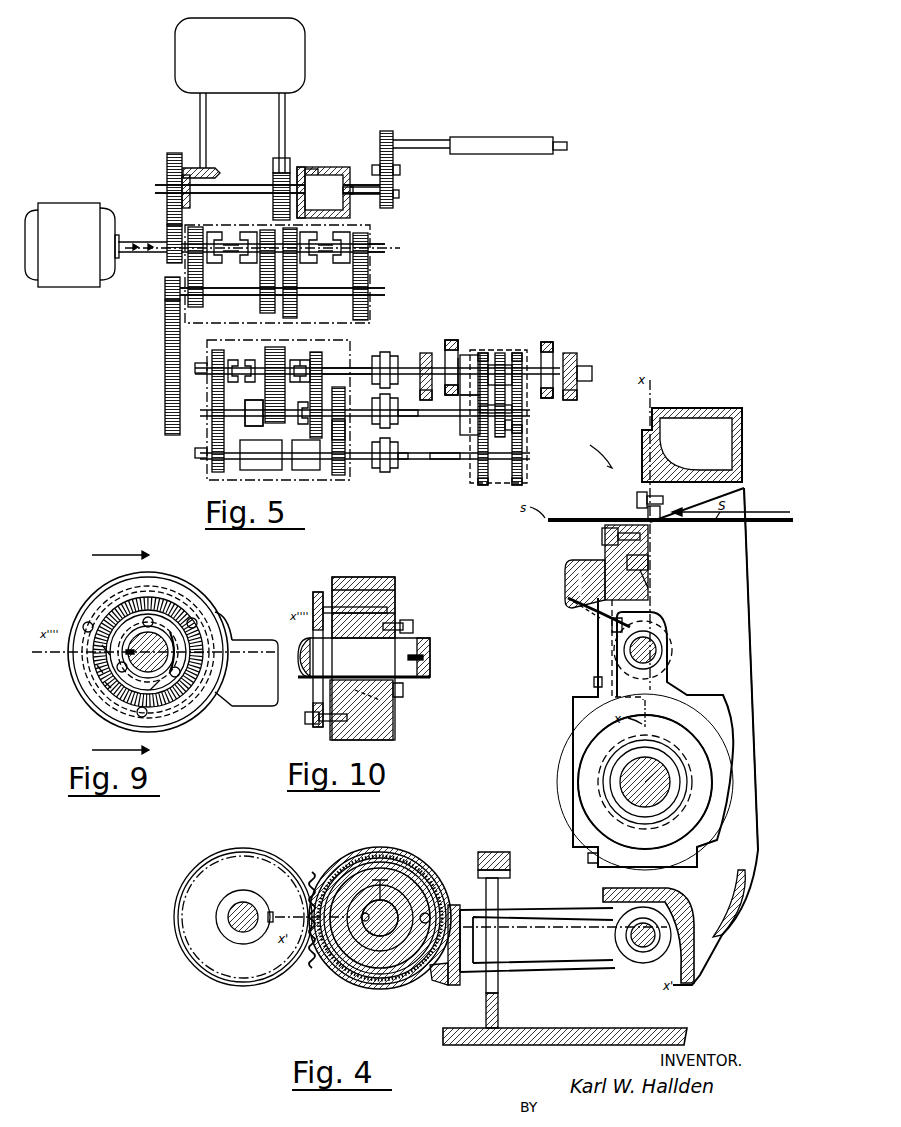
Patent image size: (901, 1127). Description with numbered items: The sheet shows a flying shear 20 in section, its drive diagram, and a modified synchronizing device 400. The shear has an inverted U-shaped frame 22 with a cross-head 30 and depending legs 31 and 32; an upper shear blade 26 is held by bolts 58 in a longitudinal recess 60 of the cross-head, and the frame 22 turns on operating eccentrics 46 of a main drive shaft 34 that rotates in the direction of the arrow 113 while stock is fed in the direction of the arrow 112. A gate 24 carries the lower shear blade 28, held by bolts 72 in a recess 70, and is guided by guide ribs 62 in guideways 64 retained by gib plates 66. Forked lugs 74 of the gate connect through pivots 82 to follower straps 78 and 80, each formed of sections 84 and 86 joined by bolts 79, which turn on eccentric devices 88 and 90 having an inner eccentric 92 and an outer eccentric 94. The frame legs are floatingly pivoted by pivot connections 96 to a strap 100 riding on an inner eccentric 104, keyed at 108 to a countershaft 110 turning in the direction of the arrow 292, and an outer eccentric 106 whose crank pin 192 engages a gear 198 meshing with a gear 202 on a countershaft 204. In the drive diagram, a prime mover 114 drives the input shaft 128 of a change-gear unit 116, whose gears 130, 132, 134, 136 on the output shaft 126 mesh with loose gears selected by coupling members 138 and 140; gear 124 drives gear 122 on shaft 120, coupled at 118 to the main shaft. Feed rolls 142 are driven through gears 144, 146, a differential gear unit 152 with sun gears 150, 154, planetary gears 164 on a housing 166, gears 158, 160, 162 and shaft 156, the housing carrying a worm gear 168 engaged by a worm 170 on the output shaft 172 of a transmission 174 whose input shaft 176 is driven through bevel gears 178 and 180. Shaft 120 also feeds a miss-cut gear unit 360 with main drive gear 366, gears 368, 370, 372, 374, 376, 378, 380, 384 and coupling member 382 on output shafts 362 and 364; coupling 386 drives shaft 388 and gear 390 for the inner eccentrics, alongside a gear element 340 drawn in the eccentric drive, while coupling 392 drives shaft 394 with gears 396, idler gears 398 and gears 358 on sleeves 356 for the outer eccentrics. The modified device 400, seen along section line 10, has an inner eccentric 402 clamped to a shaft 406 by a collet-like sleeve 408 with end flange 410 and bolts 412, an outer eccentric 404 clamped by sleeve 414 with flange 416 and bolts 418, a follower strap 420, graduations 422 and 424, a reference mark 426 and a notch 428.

In FIG. 5, the prime mover 114 is at (83, 215).
In FIG. 5, the transmission 174 is at (315, 57).
In FIG. 5, the input shaft 176 is at (200, 111).
In FIG. 5, the output shaft 172 is at (288, 124).
In FIG. 5, the worm gear 168 is at (277, 160).
In FIG. 5, the worm 170 is at (273, 189).
In FIG. 5, the bevel gear 178 is at (210, 170).
In FIG. 5, the bevel gear 180 is at (190, 200).
In FIG. 5, the gear 146 is at (168, 168).
In FIG. 5, the gear 144 is at (168, 237).
In FIG. 5, the gear 124 is at (170, 290).
In FIG. 5, the gear 122 is at (170, 340).
In FIG. 5, the input shaft 128 is at (258, 175).
In FIG. 5, the sun gear 150 is at (316, 173).
In FIG. 5, the sun gear 154 is at (330, 182).
In FIG. 5, the differential gear unit 152 is at (354, 163).
In FIG. 5, the arm or housing 166 is at (352, 188).
In FIG. 5, the planetary gears 164 is at (303, 170).
In FIG. 5, the shaft 156 is at (362, 195).
In FIG. 5, the gear 162 is at (391, 136).
In FIG. 5, the feed rolls 142 is at (505, 140).
In FIG. 5, the gear 160 is at (393, 166).
In FIG. 5, the gear 158 is at (399, 196).
In FIG. 5, the change-gear unit 116 is at (378, 267).
In FIG. 5, the splined coupling member 140 is at (230, 241).
In FIG. 5, the splined coupling member 138 is at (325, 243).
In FIG. 5, the gear 136 is at (201, 263).
In FIG. 5, the gear 134 is at (263, 263).
In FIG. 5, the gear 132 is at (291, 262).
In FIG. 5, the gear 130 is at (370, 264).
In FIG. 5, the output shaft 126 is at (232, 296).
In FIG. 5, the miss-cut gear unit 360 is at (358, 483).
In FIG. 5, the gear 370 is at (218, 352).
In FIG. 5, the main drive gear 366 is at (268, 356).
In FIG. 5, the gear 368 is at (322, 355).
In FIG. 5, the gear 384 is at (340, 476).
In FIG. 5, the shaft 120 is at (345, 368).
In FIG. 5, the coupling 118 is at (380, 356).
In FIG. 5, the output shaft 362 is at (378, 410).
In FIG. 5, the output shaft 364 is at (372, 462).
In FIG. 5, the gear 378 is at (216, 420).
In FIG. 5, the gear 380 is at (214, 467).
In FIG. 5, the splined coupling member 382 is at (258, 470).
In FIG. 5, the gear 372 is at (258, 447).
In FIG. 5, the gear 374 is at (300, 448).
In FIG. 5, the gear 376 is at (345, 430).
In FIG. 5, the coupling 386 is at (392, 452).
In FIG. 5, the coupling 392 is at (390, 462).
In FIG. 5, the shaft 394 is at (450, 460).
In FIG. 5, the leg 32 is at (425, 353).
In FIG. 4, the leg 32 is at (735, 656).
In FIG. 5, the main drive shaft 34 is at (452, 340).
In FIG. 4, the main drive shaft 34 is at (625, 766).
In FIG. 5, the sleeve 356 is at (470, 358).
In FIG. 5, the gear 358 is at (484, 353).
In FIG. 5, the hub 340 is at (503, 360).
In FIG. 5, the eccentric device 88 is at (548, 353).
In FIG. 4, the eccentric device 88 is at (589, 776).
In FIG. 5, the leg 31 is at (574, 357).
In FIG. 4, the leg 31 is at (722, 927).
In FIG. 5, the outer eccentric 94 is at (450, 342).
In FIG. 4, the outer eccentric 94 is at (698, 752).
In FIG. 5, the inner eccentric 92 is at (483, 352).
In FIG. 4, the inner eccentric 92 is at (650, 748).
In FIG. 5, the shaft 388 is at (470, 422).
In FIG. 5, the follower strap 80 is at (485, 418).
In FIG. 5, the eccentric device 90 is at (446, 400).
In FIG. 5, the gear 390 is at (515, 430).
In FIG. 5, the follower strap 78 is at (545, 406).
In FIG. 4, the follower strap 78 is at (546, 778).
In FIG. 5, the operating eccentrics 46 is at (422, 390).
In FIG. 4, the operating eccentrics 46 is at (602, 807).
In FIG. 5, the shear 20 is at (592, 450).
In FIG. 5, the idler gears 398 is at (522, 432).
In FIG. 5, the gears 396 is at (516, 486).
In FIG. 4, the cross-head 30 is at (680, 409).
In FIG. 4, the longitudinal recess 60 is at (680, 475).
In FIG. 4, the frame 22 is at (757, 485).
In FIG. 4, the arrow 112 is at (776, 512).
In FIG. 4, the shear blade 26 is at (634, 518).
In FIG. 4, the bolts 58 is at (637, 498).
In FIG. 4, the shear blade 28 is at (655, 530).
In FIG. 4, the gate 24 is at (559, 591).
In FIG. 4, the bolts 72 is at (602, 545).
In FIG. 4, the longitudinal recess 70 is at (648, 566).
In FIG. 4, the guideways 64 is at (650, 582).
In FIG. 4, the guide ribs 62 is at (580, 612).
In FIG. 4, the bolts 79 is at (612, 626).
In FIG. 4, the gib plates 66 is at (610, 647).
In FIG. 4, the pivots 82 is at (656, 650).
In FIG. 4, the forked lug 74 is at (690, 673).
In FIG. 4, the arrow 113 is at (661, 768).
In FIG. 4, the section 84 is at (600, 813).
In FIG. 4, the section 86 is at (718, 805).
In FIG. 4, the strap 100 is at (506, 913).
In FIG. 4, the pivot connections 96 is at (638, 950).
In FIG. 4, the gear 202 is at (246, 849).
In FIG. 4, the countershaft 204 is at (252, 905).
In FIG. 4, the countershaft 110 is at (400, 898).
In FIG. 4, the arrow 292 is at (382, 900).
In FIG. 4, the key 108 is at (365, 912).
In FIG. 4, the gear 198 is at (314, 878).
In FIG. 4, the crank pin 192 is at (450, 905).
In FIG. 4, the inner eccentric 104 is at (352, 960).
In FIG. 4, the outer eccentric 106 is at (390, 976).
In FIG. 9, the section line 10 is at (109, 653).
In FIG. 9, the synchronizing device 400 is at (232, 595).
In FIG. 10, the synchronizing device 400 is at (416, 581).
In FIG. 9, the outer eccentric 404 is at (169, 595).
In FIG. 10, the outer eccentric 404 is at (352, 593).
In FIG. 9, the end flange 416 is at (214, 612).
In FIG. 10, the end flange 416 is at (315, 602).
In FIG. 9, the bolts 418 is at (204, 622).
In FIG. 10, the bolts 418 is at (310, 720).
In FIG. 9, the collet-like sleeve 414 is at (109, 618).
In FIG. 10, the collet-like sleeve 414 is at (342, 607).
In FIG. 9, the shaft 406 is at (158, 640).
In FIG. 10, the shaft 406 is at (316, 660).
In FIG. 9, the inner eccentric 402 is at (122, 695).
In FIG. 10, the inner eccentric 402 is at (382, 625).
In FIG. 9, the reference mark or notch 428 is at (126, 652).
In FIG. 10, the reference mark or notch 428 is at (420, 657).
In FIG. 9, the reference mark 426 is at (96, 650).
In FIG. 9, the graduations 424 is at (93, 668).
In FIG. 9, the graduations 422 is at (105, 690).
In FIG. 9, the end flange 410 is at (176, 651).
In FIG. 10, the end flange 410 is at (403, 693).
In FIG. 9, the bolts 412 is at (178, 670).
In FIG. 10, the bolts 412 is at (413, 627).
In FIG. 9, the collet-like sleeve 408 is at (152, 690).
In FIG. 10, the collet-like sleeve 408 is at (395, 700).
In FIG. 9, the follower strap 420 is at (220, 712).
In FIG. 10, the follower strap 420 is at (378, 580).